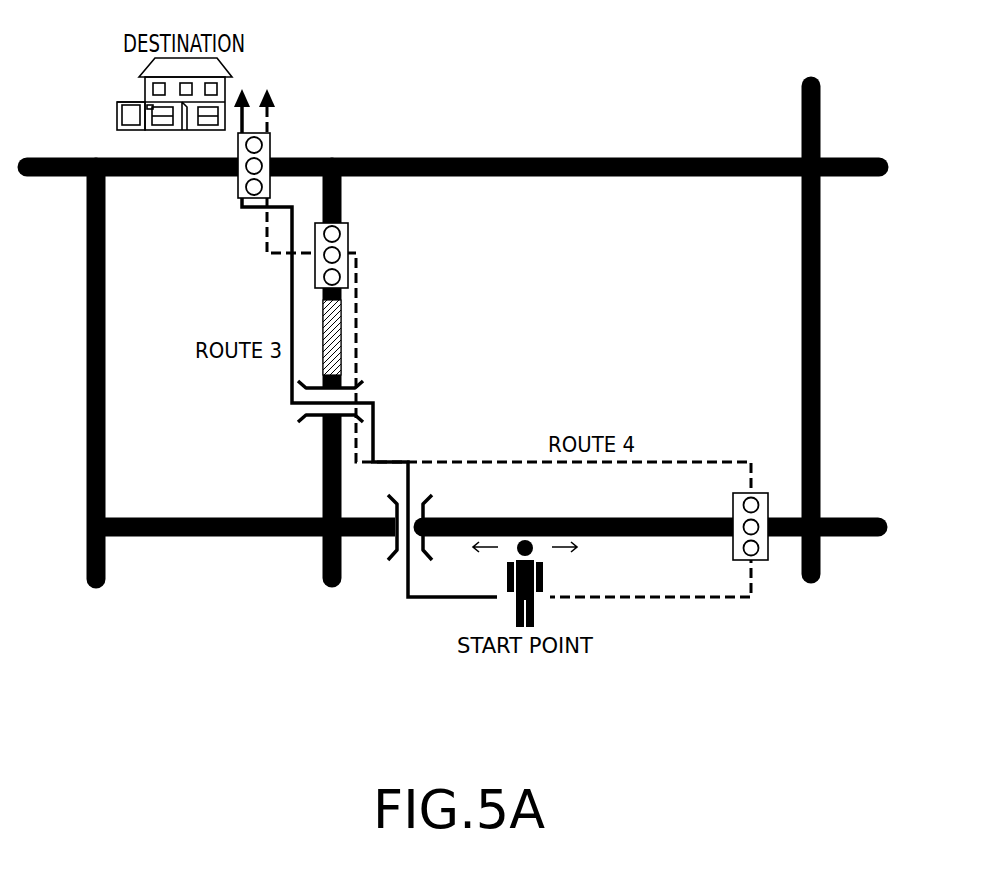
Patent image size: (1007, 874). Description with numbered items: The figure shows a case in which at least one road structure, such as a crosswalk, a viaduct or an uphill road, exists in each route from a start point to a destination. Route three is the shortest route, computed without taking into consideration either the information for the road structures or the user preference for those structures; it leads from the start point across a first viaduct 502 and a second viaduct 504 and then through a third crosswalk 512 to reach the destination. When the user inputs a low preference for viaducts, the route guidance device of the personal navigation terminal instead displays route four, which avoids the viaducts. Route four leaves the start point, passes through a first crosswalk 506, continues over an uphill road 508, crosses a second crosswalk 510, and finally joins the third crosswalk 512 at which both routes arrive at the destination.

The first viaduct 502 is at (432, 497).
The second viaduct 504 is at (364, 386).
The first crosswalk 506 is at (757, 561).
The uphill road 508 is at (343, 332).
The second crosswalk 510 is at (349, 271).
The third crosswalk 512 is at (272, 146).